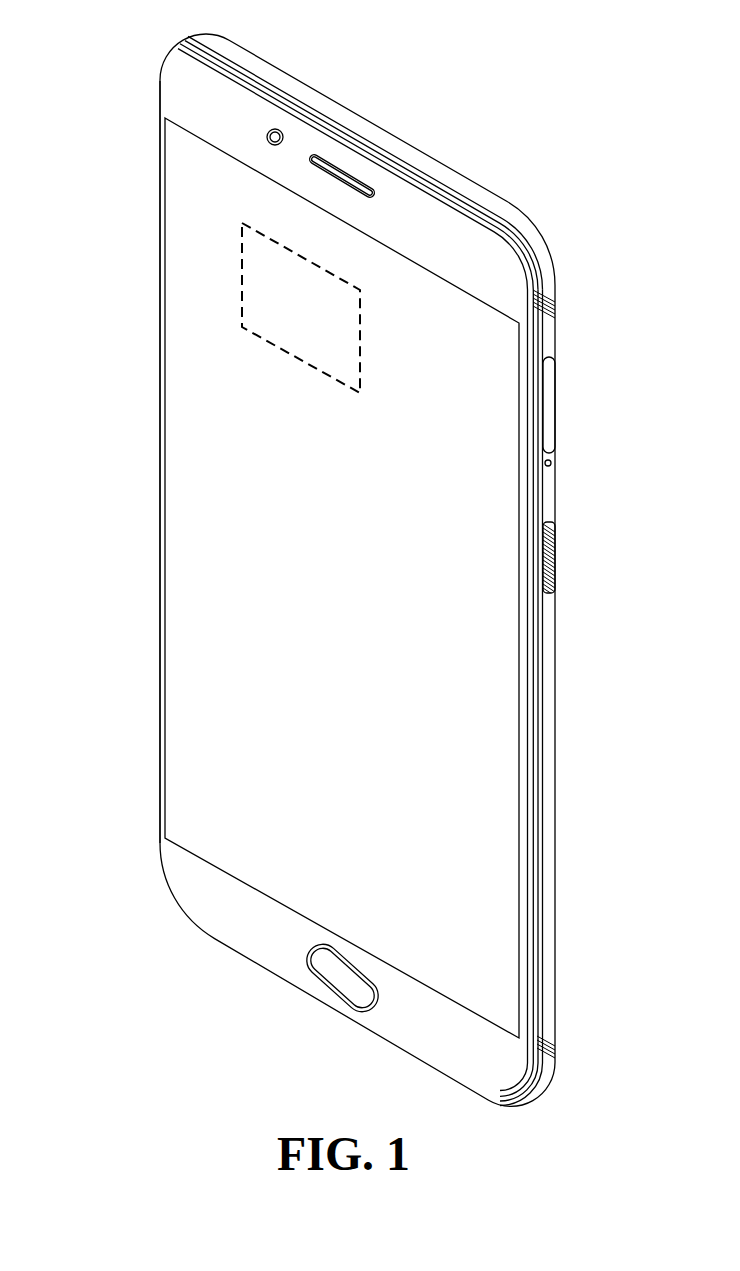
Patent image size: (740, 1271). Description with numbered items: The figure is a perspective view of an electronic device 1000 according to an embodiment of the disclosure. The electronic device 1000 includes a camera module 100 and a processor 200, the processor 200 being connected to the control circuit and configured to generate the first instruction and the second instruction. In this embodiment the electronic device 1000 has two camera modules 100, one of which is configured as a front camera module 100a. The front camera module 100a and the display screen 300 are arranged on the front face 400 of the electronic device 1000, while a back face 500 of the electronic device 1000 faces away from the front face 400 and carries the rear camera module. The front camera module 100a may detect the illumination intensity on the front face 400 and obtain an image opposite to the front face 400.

The electronic device 1000 is at (124, 549).
The camera module 100 is at (388, 37).
The front camera module 100a is at (276, 130).
The processor 200 is at (242, 285).
The display screen 300 is at (190, 397).
The front face 400 is at (163, 707).
The back face 500 is at (563, 772).